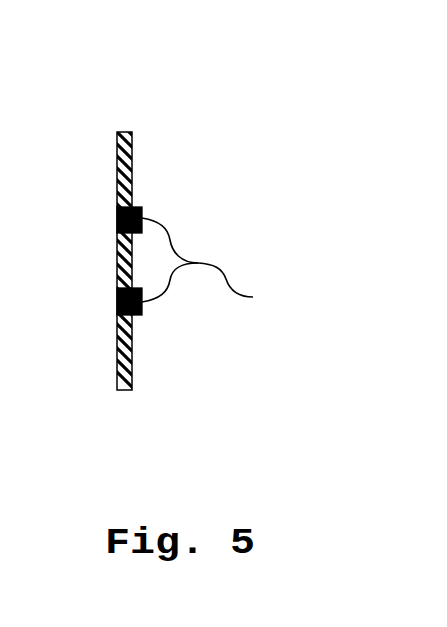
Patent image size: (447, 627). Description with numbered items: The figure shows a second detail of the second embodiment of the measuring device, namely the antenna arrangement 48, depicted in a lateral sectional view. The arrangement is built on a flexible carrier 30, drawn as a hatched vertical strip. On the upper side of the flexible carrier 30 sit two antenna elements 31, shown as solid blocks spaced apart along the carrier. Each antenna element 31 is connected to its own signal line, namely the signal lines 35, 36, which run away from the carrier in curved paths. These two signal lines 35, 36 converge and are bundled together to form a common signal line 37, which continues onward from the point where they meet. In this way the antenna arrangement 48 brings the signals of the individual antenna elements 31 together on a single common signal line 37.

The flexible carrier 30 is at (132, 167).
The antenna elements 31 is at (117, 214).
The signal line 35 is at (165, 228).
The signal line 36 is at (167, 292).
The common signal line 37 is at (232, 290).
The antenna arrangement 48 is at (171, 87).